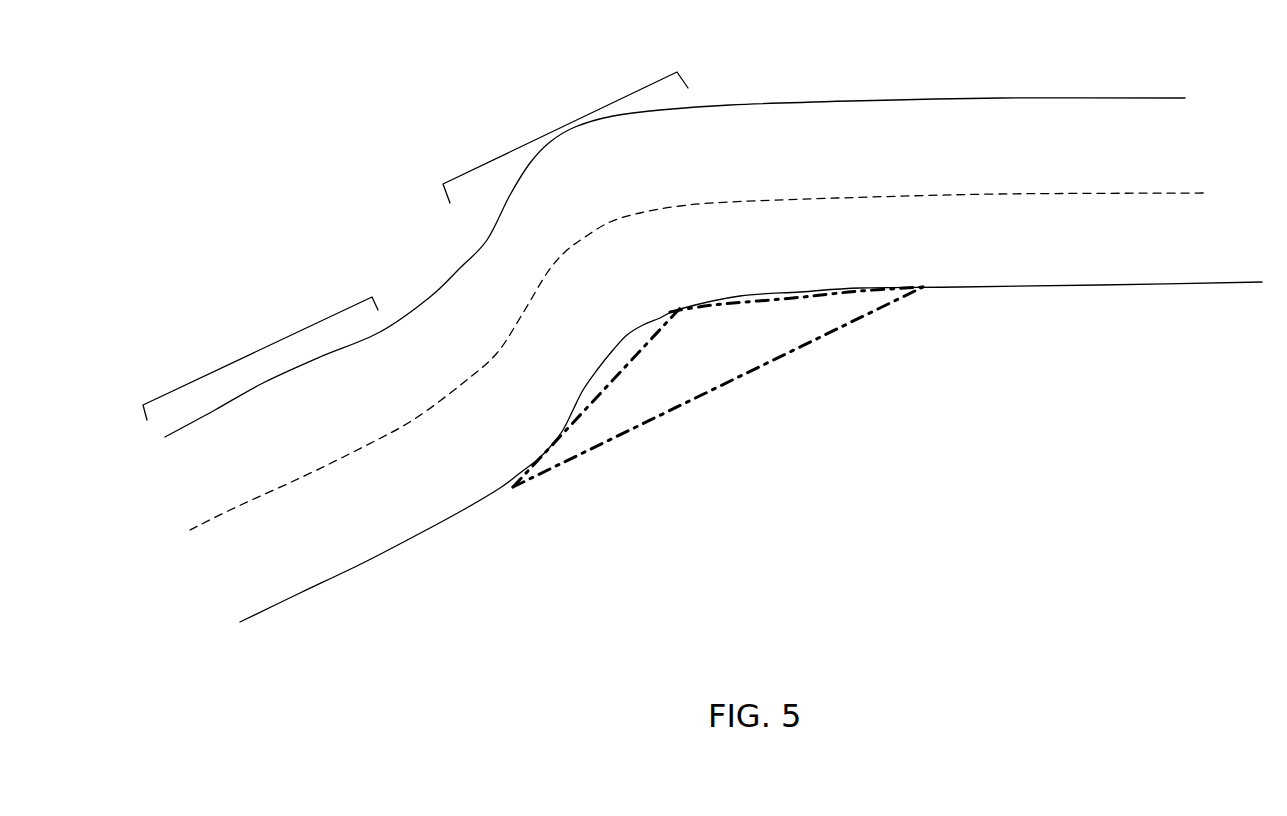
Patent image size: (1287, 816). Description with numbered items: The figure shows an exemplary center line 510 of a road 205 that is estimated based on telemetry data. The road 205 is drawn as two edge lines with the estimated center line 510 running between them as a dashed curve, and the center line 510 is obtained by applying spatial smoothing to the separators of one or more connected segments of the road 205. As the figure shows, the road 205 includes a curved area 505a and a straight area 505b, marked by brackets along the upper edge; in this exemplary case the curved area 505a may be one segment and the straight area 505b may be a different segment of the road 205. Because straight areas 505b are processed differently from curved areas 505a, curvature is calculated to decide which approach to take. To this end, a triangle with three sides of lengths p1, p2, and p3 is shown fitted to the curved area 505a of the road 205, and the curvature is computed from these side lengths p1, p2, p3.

The curved area 505a is at (560, 127).
The straight area 505b is at (258, 352).
The center line 510 is at (838, 198).
The road 205 is at (1197, 288).
The triangle side length p1 is at (597, 396).
The triangle side length p2 is at (796, 314).
The triangle side length p3 is at (718, 387).